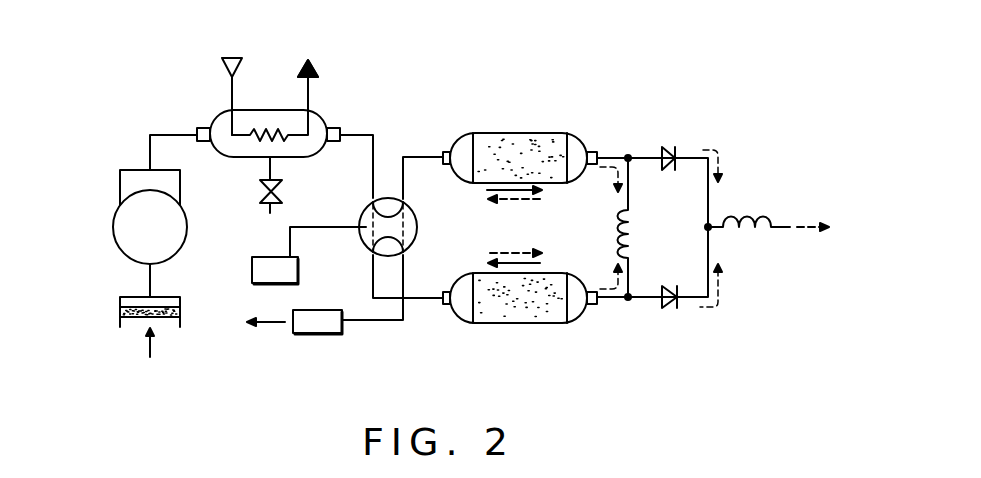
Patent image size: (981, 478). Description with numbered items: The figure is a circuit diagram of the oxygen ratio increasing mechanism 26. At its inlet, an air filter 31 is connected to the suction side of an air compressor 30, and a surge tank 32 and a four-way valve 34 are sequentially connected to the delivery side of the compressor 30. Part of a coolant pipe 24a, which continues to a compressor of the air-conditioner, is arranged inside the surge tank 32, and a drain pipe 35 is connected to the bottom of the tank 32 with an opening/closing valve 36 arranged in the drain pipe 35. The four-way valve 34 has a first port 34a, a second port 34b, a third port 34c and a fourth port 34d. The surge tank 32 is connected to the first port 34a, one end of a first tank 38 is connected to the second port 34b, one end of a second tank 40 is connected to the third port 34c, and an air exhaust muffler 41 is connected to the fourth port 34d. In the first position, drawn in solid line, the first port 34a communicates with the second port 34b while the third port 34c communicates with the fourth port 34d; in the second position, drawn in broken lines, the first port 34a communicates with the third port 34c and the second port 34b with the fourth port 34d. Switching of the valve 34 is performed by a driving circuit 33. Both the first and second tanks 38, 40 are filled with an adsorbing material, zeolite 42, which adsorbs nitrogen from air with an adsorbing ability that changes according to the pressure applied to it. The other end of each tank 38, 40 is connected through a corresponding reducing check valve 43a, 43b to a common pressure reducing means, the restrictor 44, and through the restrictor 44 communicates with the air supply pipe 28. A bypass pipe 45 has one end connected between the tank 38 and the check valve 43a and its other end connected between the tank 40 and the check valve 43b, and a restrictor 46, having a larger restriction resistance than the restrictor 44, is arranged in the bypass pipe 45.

The coolant pipe 24a is at (235, 82).
The oxygen ratio increasing mechanism 26 is at (636, 223).
The air supply pipe 28 is at (790, 222).
The air compressor 30 is at (112, 222).
The air filter 31 is at (120, 305).
The surge tank 32 is at (320, 110).
The driving circuit 33 is at (252, 270).
The four-way valve 34 is at (384, 227).
The first port 34a is at (373, 198).
The second port 34b is at (412, 188).
The third port 34c is at (362, 252).
The fourth port 34d is at (403, 253).
The drain pipe 35 is at (268, 168).
The opening/closing valve 36 is at (270, 200).
The first tank 38 is at (575, 133).
The second tank 40 is at (555, 332).
The air exhaust muffler 41 is at (315, 333).
The zeolite 42 is at (513, 133).
The reducing check valve 43a is at (668, 145).
The reducing check valve 43b is at (672, 312).
The restrictor 44 is at (740, 215).
The bypass pipe 45 is at (628, 180).
The restrictor 46 is at (642, 233).